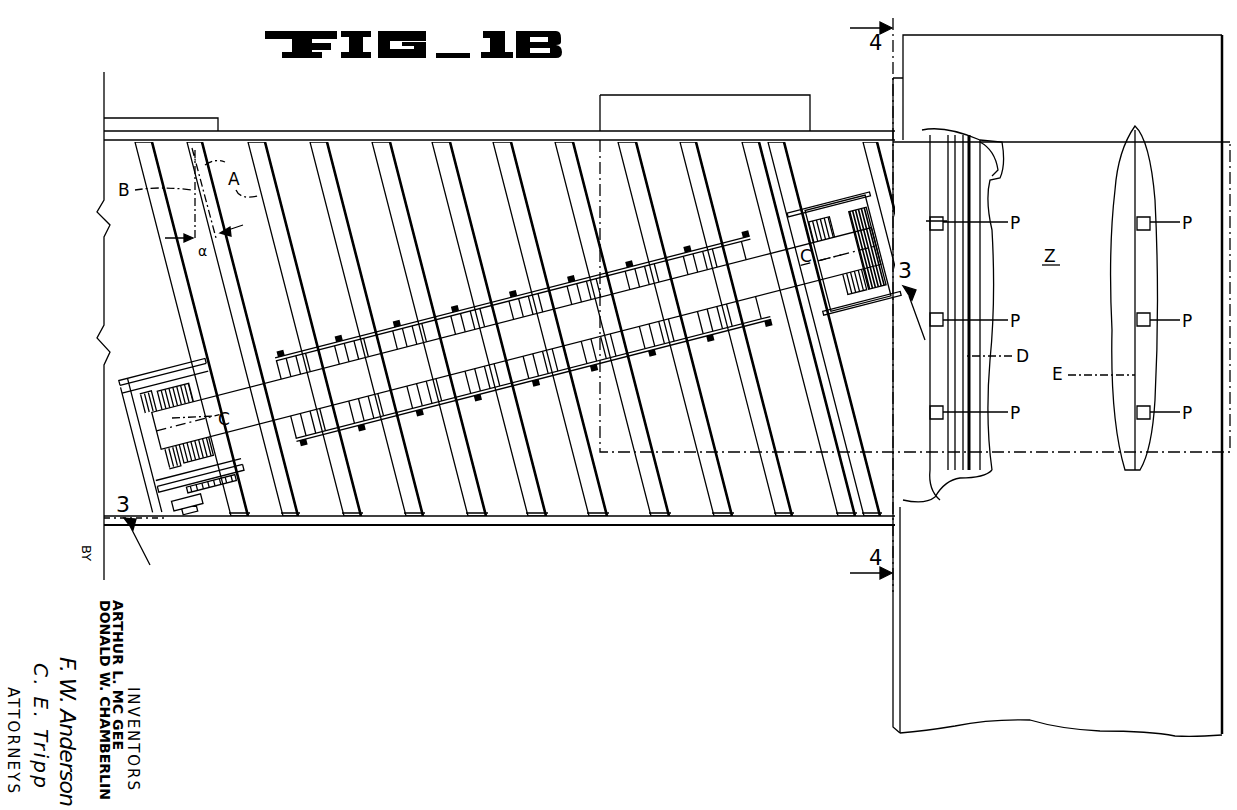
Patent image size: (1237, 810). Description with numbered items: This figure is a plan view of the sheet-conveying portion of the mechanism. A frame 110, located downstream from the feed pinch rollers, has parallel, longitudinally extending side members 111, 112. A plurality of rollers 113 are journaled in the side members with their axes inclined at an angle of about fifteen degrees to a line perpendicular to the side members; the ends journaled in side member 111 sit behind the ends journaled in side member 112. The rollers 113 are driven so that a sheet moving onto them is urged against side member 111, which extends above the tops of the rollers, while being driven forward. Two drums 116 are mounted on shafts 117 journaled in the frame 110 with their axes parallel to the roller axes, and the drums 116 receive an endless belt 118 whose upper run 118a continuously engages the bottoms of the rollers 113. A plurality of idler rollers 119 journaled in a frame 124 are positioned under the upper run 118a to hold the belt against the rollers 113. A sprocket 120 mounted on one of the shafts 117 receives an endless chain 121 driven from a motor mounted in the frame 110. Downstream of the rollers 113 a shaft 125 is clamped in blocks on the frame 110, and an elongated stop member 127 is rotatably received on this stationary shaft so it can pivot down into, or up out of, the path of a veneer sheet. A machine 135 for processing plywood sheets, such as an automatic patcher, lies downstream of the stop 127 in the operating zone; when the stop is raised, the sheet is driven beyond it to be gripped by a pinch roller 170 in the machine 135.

The frame 110 is at (314, 124).
The side member 111 is at (369, 140).
The side member 112 is at (342, 528).
The rollers 113 is at (488, 145).
The drums 116 is at (508, 323).
The shafts 117 is at (474, 348).
The endless belt 118 is at (538, 397).
The upper run 118a is at (143, 445).
The idler rollers 119 is at (517, 313).
The sprocket 120 is at (186, 538).
The endless chain 121 is at (227, 519).
The frame 124 is at (509, 283).
The shaft 125 is at (924, 130).
The stop member 127 is at (926, 498).
The machine 135 is at (1048, 722).
The pinch roller 170 is at (972, 195).